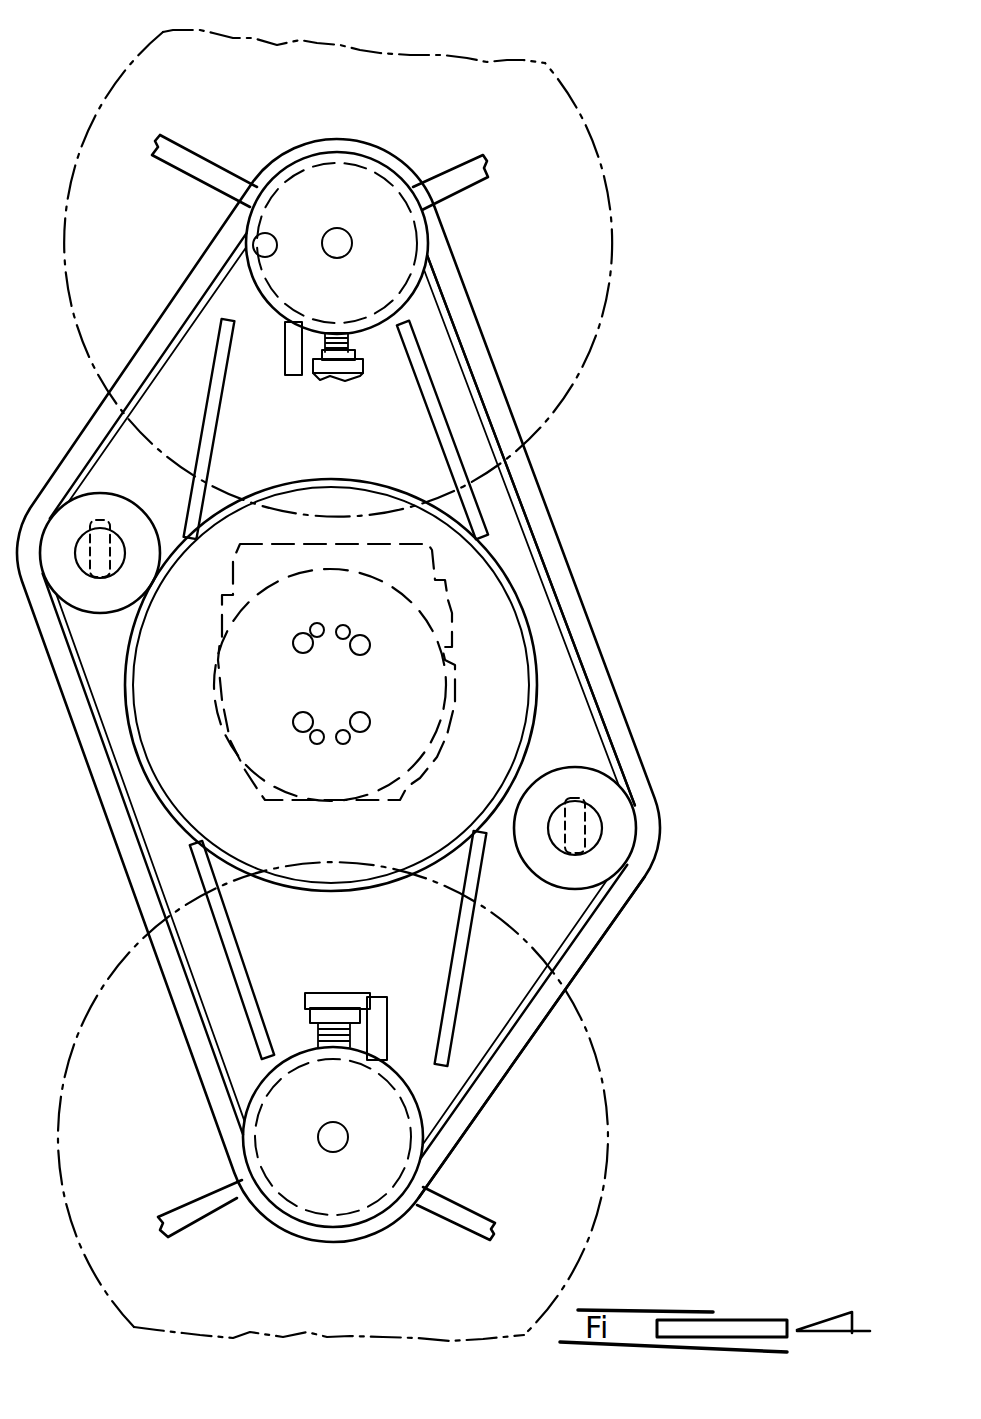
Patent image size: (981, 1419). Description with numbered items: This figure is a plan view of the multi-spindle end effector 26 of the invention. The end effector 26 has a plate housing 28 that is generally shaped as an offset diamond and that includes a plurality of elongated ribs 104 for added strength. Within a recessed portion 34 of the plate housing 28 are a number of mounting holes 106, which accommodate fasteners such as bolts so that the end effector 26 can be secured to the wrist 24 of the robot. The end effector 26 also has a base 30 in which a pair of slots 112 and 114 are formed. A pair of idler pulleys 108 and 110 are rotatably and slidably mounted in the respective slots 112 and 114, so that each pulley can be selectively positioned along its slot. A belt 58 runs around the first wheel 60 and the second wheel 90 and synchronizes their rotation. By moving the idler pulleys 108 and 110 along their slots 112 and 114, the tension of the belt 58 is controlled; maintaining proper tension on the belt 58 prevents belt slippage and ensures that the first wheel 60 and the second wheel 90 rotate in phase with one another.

The wrist 24 is at (448, 582).
The end effector 26 is at (130, 922).
The plate housing 28 is at (580, 957).
The base 30 is at (595, 758).
The recessed portion 34 is at (522, 652).
The belt 58 is at (148, 862).
The first wheel 60 is at (597, 157).
The second wheel 90 is at (605, 1125).
The elongated ribs 104 is at (430, 418).
The mounting holes 106 is at (248, 772).
The idler pulley 108 is at (120, 593).
The idler pulley 110 is at (620, 810).
The slot 112 is at (112, 533).
The slot 114 is at (600, 858).